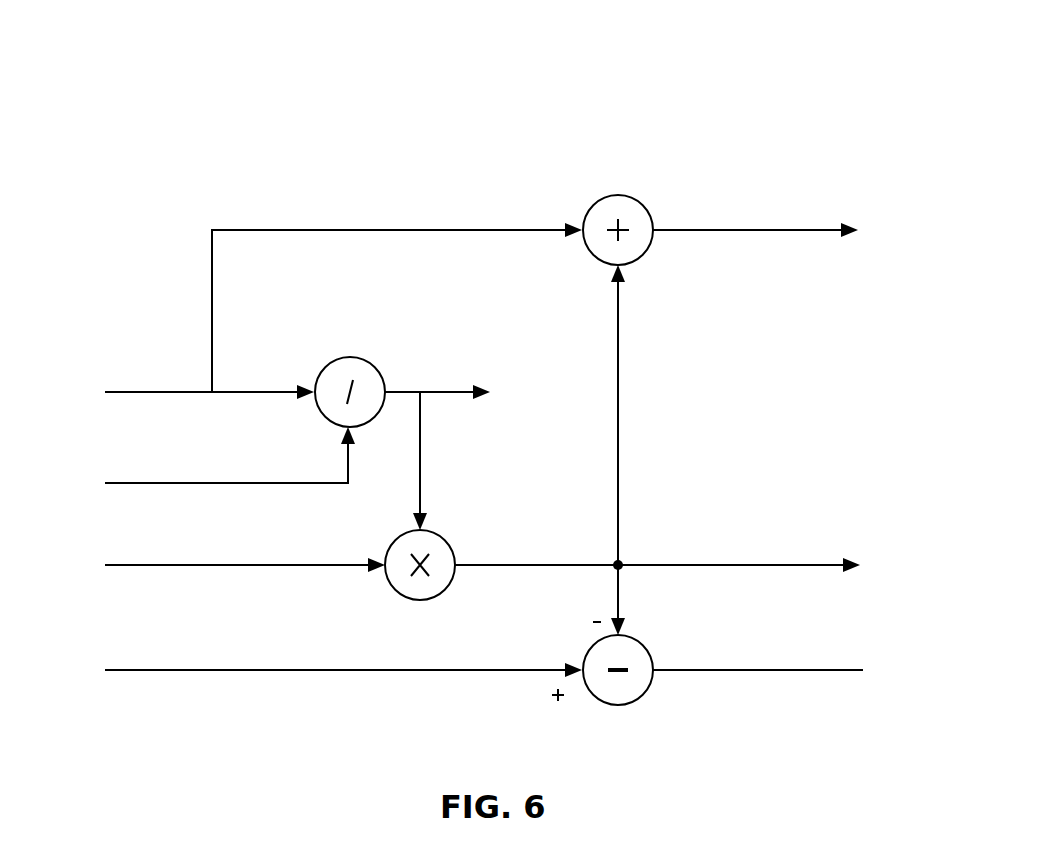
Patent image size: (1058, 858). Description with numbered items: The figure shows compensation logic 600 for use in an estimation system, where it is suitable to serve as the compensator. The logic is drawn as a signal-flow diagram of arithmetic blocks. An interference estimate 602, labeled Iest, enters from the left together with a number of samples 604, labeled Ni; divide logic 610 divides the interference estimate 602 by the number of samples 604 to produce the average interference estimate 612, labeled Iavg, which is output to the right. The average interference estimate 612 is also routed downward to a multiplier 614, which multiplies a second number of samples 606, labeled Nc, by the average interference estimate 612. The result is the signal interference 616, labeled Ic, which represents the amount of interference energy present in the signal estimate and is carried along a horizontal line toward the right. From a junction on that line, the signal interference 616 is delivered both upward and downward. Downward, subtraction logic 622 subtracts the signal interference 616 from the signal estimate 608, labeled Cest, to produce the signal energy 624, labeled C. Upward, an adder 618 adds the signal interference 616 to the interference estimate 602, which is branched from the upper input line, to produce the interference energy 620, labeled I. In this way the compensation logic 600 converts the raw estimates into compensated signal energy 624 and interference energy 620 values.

The compensation logic 600 is at (760, 87).
The interference estimate 602 is at (137, 390).
The number of samples 604 is at (133, 482).
The number of samples 606 is at (125, 565).
The signal estimate 608 is at (125, 670).
The divide logic 610 is at (347, 357).
The average interference estimate 612 is at (447, 391).
The multiplier 614 is at (449, 542).
The signal interference 616 is at (746, 565).
The adder 618 is at (619, 196).
The interference energy 620 is at (710, 229).
The subtraction logic 622 is at (645, 645).
The signal energy 624 is at (745, 670).